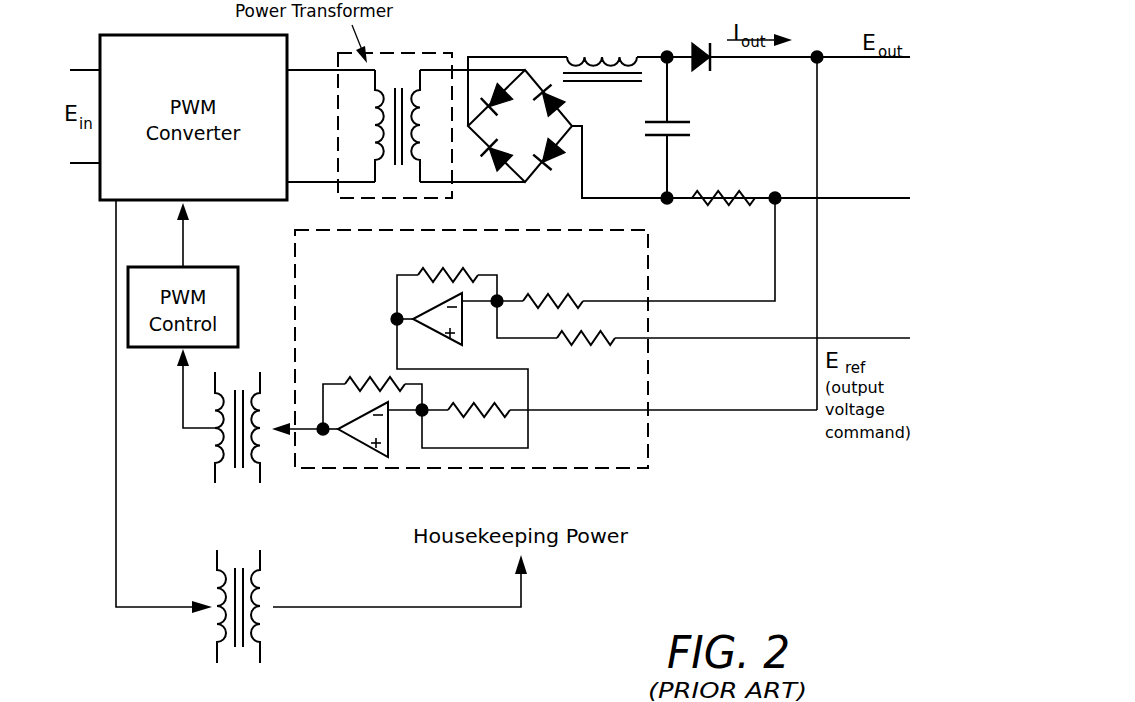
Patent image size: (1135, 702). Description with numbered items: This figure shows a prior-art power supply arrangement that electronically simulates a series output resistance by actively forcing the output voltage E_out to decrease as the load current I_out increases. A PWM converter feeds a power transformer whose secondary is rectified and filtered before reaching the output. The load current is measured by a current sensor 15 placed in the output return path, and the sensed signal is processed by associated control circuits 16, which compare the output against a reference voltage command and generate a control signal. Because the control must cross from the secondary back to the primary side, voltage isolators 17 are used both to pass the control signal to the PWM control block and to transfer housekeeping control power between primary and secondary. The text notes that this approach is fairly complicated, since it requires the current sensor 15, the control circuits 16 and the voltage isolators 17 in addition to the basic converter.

The current sensor 15 is at (718, 205).
The control circuits 16 is at (650, 468).
The voltage isolators 17 is at (236, 384).